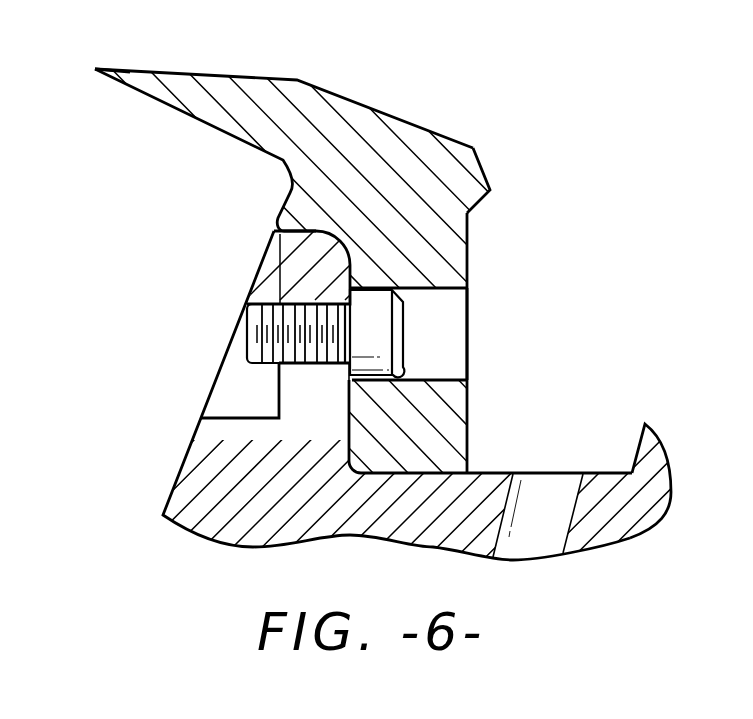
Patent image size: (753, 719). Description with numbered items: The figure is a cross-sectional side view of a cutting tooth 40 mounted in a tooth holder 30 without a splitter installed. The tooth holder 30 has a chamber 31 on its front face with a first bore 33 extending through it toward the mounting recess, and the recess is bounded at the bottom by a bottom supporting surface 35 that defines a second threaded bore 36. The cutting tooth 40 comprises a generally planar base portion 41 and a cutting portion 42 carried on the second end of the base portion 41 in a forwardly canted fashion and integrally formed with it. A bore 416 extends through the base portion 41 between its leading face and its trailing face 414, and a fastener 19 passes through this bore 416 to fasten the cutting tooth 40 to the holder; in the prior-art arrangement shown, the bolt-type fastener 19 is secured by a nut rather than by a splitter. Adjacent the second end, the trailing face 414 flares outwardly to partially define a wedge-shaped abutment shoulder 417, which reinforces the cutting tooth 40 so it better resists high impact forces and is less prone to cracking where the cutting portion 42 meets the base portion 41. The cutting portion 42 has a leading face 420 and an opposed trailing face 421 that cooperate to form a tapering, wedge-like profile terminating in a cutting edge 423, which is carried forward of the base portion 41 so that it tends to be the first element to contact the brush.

The fastener 19 is at (378, 334).
The tooth holder 30 is at (376, 429).
The chamber 31 is at (227, 393).
The first bore 33 is at (275, 303).
The bottom supporting surface 35 is at (613, 473).
The second threaded bore 36 is at (542, 535).
The cutting tooth 40 is at (376, 250).
The base portion 41 is at (304, 250).
The cutting portion 42 is at (380, 250).
The trailing face 414 is at (468, 435).
The bore 416 is at (468, 297).
The abutment shoulder 417 is at (487, 196).
The leading face 420 is at (213, 132).
The trailing face 421 is at (207, 72).
The cutting edge 423 is at (95, 69).